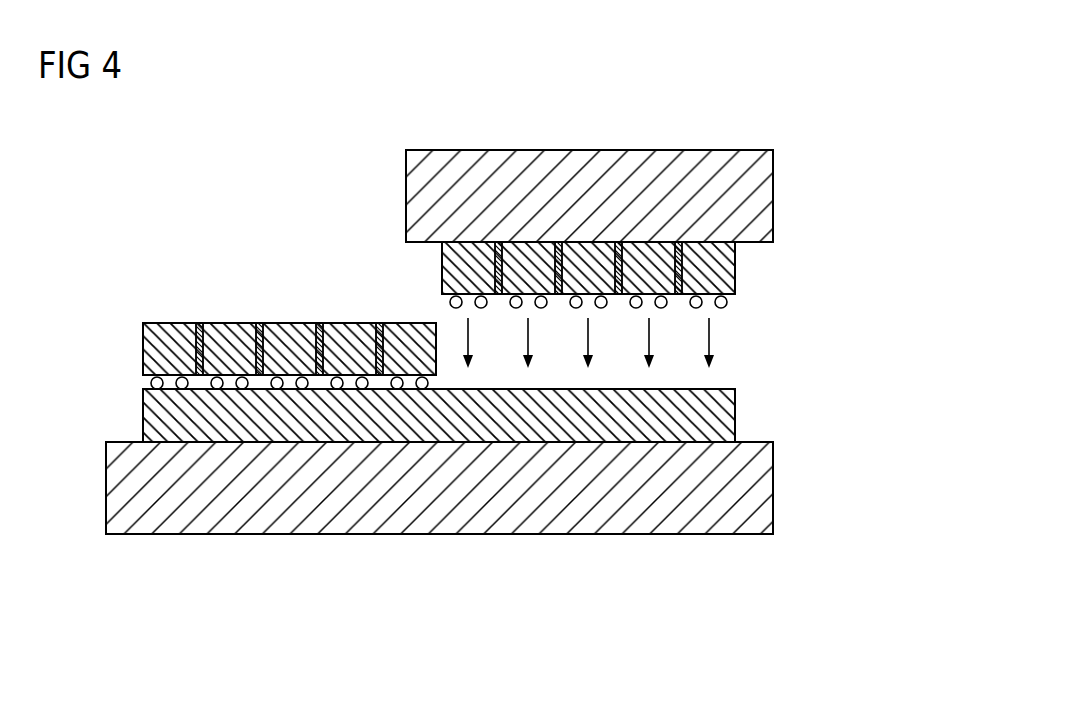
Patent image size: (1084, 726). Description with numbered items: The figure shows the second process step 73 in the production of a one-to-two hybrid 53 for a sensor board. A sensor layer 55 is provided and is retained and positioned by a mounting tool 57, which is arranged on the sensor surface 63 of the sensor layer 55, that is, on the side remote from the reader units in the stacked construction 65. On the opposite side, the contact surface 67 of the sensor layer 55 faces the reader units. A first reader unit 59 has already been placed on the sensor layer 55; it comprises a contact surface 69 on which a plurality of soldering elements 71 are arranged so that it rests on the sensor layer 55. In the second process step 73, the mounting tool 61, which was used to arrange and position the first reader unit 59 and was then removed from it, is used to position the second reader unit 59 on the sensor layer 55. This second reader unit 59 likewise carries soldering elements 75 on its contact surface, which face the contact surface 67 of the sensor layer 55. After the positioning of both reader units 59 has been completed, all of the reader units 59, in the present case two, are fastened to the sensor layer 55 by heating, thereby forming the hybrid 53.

The hybrid 53 is at (336, 133).
The sensor layer 55 is at (566, 390).
The mounting tool 57 is at (531, 524).
The reader unit 59 is at (721, 268).
The mounting tool 61 is at (497, 160).
The sensor surface 63 is at (120, 440).
The stacked construction 65 is at (798, 212).
The contact surface 67 is at (678, 390).
The contact surface 69 is at (733, 300).
The soldering elements 71 is at (150, 383).
The second process step 73 is at (708, 124).
The soldering elements 75 is at (449, 301).